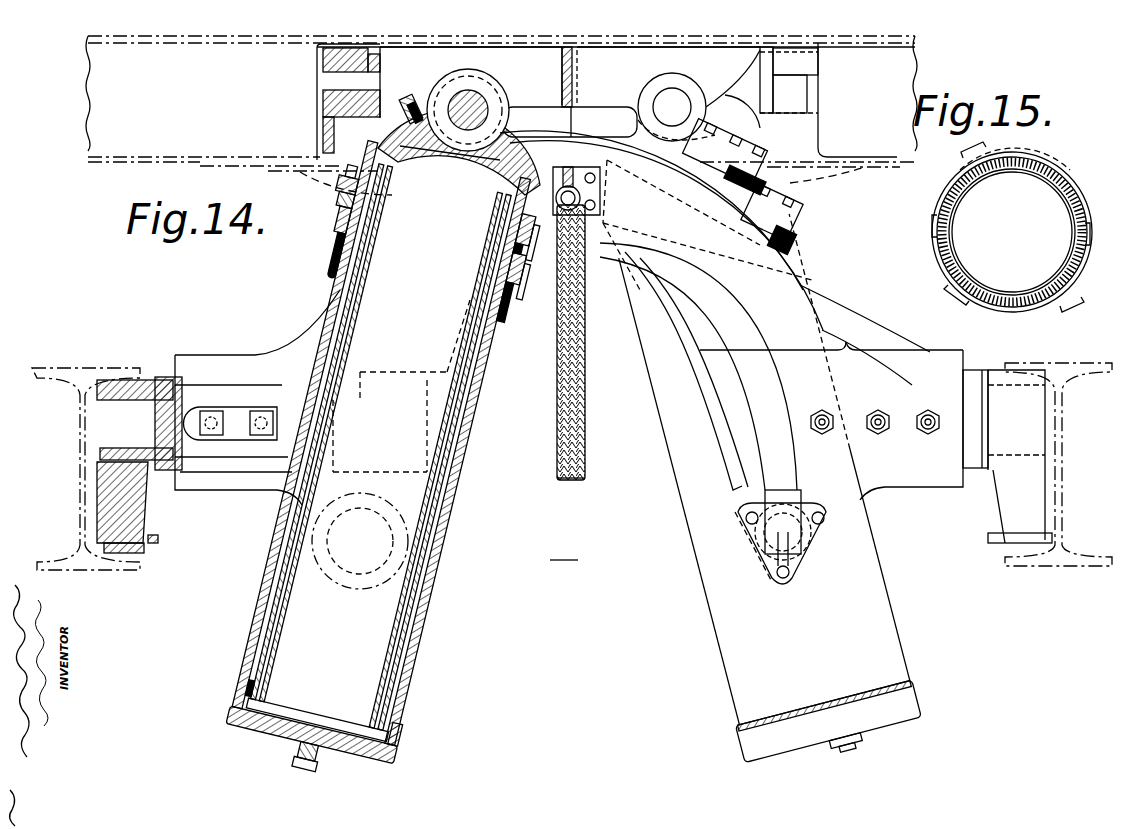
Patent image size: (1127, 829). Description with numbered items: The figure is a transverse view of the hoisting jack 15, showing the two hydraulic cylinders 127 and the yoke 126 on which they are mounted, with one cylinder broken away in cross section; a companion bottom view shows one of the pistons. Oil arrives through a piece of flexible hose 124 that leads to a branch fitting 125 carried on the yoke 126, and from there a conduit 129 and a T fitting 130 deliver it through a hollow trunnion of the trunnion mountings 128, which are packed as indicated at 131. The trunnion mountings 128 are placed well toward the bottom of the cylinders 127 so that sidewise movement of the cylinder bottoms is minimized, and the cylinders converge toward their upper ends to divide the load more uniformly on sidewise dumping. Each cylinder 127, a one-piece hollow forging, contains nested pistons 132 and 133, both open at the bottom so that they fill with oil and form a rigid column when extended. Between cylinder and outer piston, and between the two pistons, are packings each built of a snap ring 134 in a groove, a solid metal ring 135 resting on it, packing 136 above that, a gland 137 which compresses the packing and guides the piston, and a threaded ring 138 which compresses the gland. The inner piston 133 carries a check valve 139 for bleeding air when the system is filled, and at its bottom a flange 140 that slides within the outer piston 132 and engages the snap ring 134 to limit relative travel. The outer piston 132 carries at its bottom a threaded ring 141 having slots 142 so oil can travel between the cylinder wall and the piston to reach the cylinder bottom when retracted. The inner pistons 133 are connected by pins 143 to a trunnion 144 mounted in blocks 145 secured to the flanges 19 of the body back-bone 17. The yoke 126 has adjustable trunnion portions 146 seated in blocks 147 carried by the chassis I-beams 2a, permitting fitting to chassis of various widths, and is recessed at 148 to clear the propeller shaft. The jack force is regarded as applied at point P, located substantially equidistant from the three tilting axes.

In FIG. 14, the back-bone 17 is at (428, 46).
In FIG. 14, the flanges 19 is at (316, 85).
In FIG. 14, the trunnion 144 is at (478, 62).
In FIG. 14, the point of force application P is at (567, 47).
In FIG. 14, the check valve 139 is at (418, 112).
In FIG. 14, the pins 143 is at (482, 100).
In FIG. 14, the blocks 145 is at (324, 124).
In FIG. 14, the threaded ring 138 is at (352, 205).
In FIG. 14, the gland 137 is at (352, 222).
In FIG. 14, the packing 136 is at (350, 242).
In FIG. 14, the solid metal ring 135 is at (345, 260).
In FIG. 14, the snap ring 134 is at (342, 270).
In FIG. 14, the branch fitting 125 is at (567, 175).
In FIG. 14, the yoke 126 is at (301, 340).
In FIG. 14, the adjustable trunnion portions 146 is at (170, 365).
In FIG. 14, the blocks 147 is at (106, 490).
In FIG. 14, the I-beams 2a is at (112, 566).
In FIG. 14, the recess 148 is at (548, 342).
In FIG. 14, the flexible hose 124 is at (566, 440).
In FIG. 14, the conduit 129 is at (772, 393).
In FIG. 14, the T fitting 130 is at (745, 530).
In FIG. 14, the packing 131 is at (738, 580).
In FIG. 14, the hydraulic cylinders 127 is at (262, 573).
In FIG. 14, the piston 132 is at (272, 600).
In FIG. 14, the piston 133 is at (286, 625).
In FIG. 14, the trunnion mountings 128 is at (358, 568).
In FIG. 14, the slots 142 is at (243, 687).
In FIG. 15, the slots 142 is at (933, 243).
In FIG. 14, the flange 140 is at (272, 683).
In FIG. 14, the threaded ring 141 is at (400, 722).
In FIG. 15, the threaded ring 141 is at (946, 208).
In FIG. 14, the hydraulic jack 15 is at (564, 549).